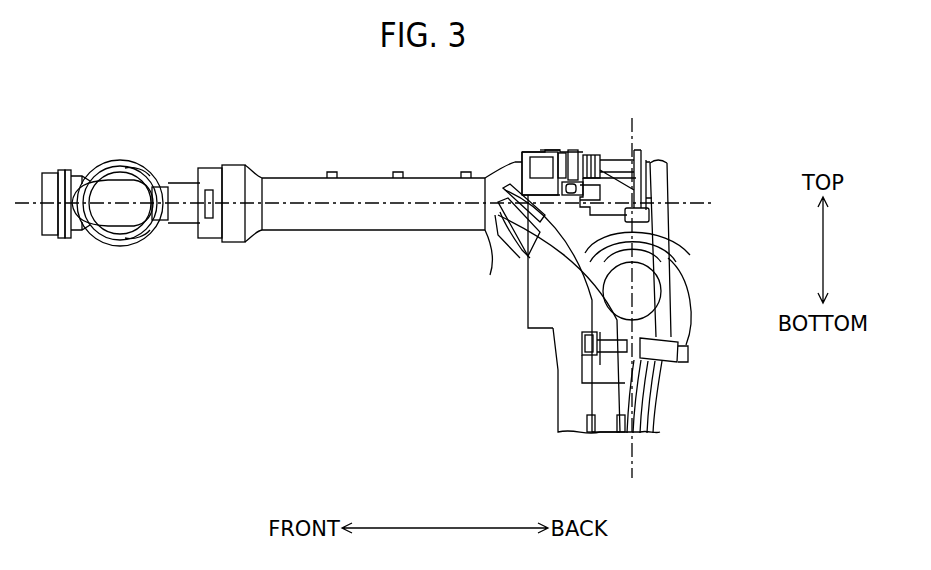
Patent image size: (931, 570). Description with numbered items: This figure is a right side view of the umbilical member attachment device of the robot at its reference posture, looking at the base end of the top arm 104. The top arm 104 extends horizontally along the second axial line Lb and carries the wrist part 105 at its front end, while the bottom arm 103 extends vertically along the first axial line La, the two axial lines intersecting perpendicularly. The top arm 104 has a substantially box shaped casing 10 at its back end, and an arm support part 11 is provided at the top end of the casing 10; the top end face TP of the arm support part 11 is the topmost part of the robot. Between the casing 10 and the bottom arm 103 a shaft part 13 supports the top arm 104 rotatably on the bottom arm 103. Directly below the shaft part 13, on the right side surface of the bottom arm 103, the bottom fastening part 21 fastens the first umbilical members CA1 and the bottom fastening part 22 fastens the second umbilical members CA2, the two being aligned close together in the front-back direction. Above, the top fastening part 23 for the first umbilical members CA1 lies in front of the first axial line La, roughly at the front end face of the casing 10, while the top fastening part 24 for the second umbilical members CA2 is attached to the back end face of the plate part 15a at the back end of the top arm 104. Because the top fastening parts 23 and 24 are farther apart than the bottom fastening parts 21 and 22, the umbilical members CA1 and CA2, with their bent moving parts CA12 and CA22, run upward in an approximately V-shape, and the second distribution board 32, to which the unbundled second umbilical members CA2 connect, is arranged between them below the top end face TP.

The top arm 104 is at (306, 176).
The wrist part 105 is at (118, 250).
The second axial line Lb is at (331, 215).
The top end face TP is at (533, 150).
The arm support part 11 is at (548, 146).
The second distribution board 32 is at (576, 150).
The plate part 15a is at (643, 150).
The top fastening part 24 is at (670, 180).
The shaft part 13 is at (640, 290).
The top fastening part 23 is at (500, 202).
The casing 10 is at (527, 312).
The moving part CA12 is at (590, 303).
The moving part CA22 is at (672, 300).
The bottom fastening part 21 is at (590, 353).
The bottom fastening part 22 is at (684, 362).
The bottom arm 103 is at (560, 408).
The second umbilical members CA2 is at (655, 395).
The first umbilical members CA1 is at (590, 422).
The first axial line La is at (633, 312).